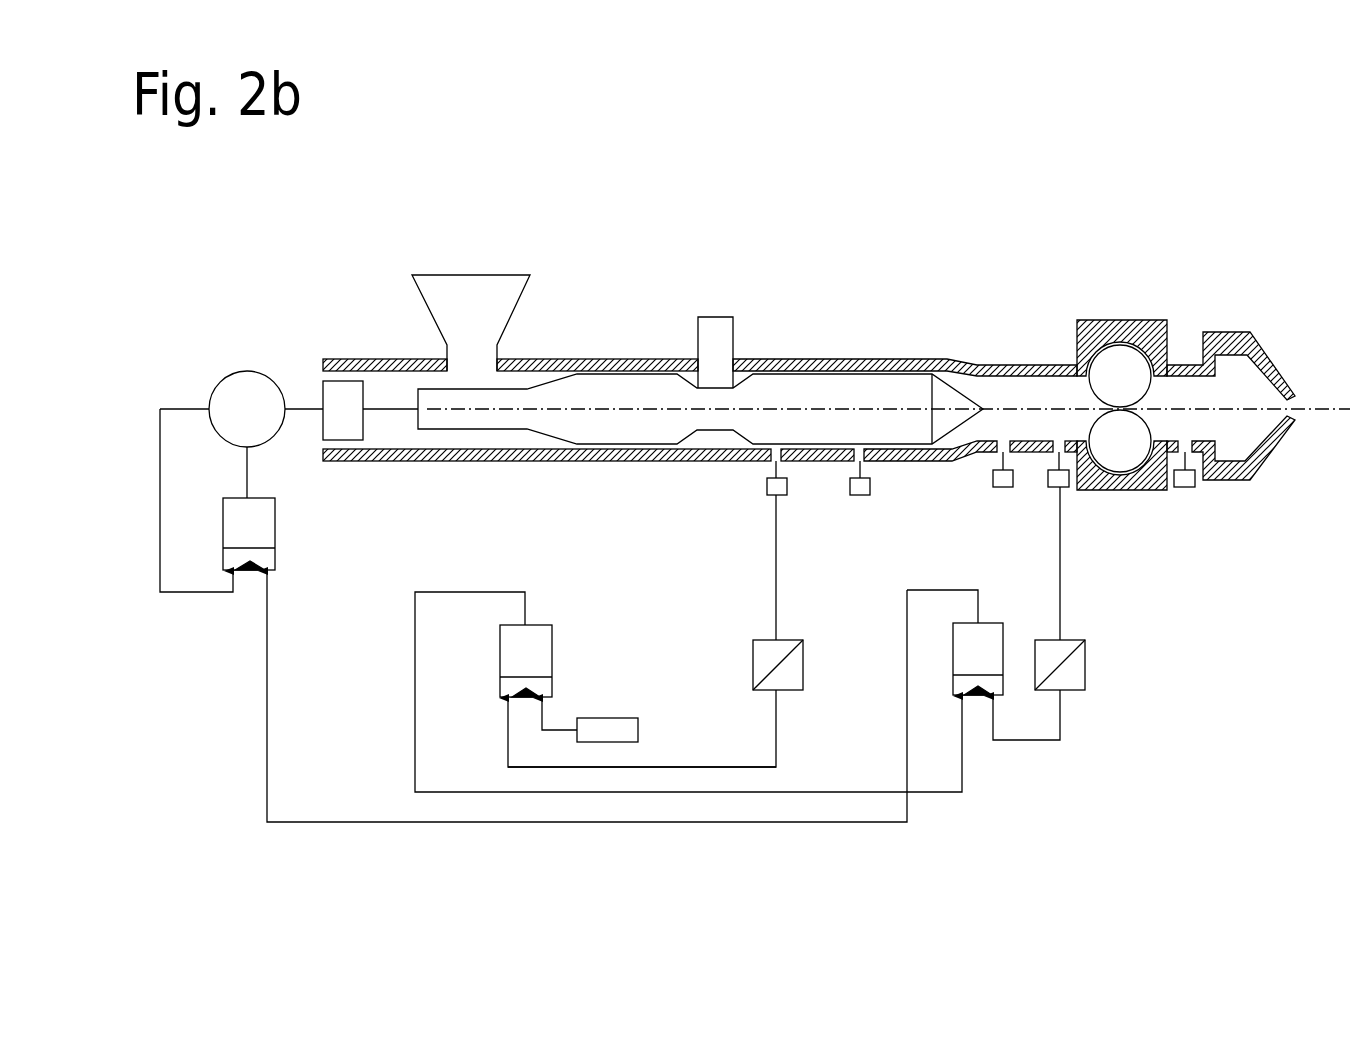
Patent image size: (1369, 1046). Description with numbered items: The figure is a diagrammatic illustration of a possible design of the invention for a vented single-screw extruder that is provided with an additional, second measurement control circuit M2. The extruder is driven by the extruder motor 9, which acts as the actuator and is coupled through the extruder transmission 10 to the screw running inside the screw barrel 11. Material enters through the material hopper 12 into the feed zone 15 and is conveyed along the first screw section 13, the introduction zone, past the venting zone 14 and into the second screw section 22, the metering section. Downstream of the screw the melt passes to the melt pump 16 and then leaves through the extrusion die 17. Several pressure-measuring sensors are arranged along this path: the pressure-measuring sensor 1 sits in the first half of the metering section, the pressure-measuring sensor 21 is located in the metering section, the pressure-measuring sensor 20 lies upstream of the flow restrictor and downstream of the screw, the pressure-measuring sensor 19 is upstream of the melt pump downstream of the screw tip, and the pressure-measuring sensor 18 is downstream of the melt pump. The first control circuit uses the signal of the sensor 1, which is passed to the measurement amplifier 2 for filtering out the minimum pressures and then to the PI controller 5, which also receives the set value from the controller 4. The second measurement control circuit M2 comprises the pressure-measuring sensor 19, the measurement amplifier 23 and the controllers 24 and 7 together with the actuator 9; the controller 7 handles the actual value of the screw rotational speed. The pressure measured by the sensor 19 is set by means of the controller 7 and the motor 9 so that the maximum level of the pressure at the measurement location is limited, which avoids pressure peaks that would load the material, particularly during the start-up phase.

The pressure-measuring sensor 1 is at (765, 490).
The measurement amplifier 2 is at (767, 688).
The controller 4 is at (610, 718).
The controller 5 is at (550, 625).
The controller 7 is at (272, 503).
The extruder motor 9 is at (222, 382).
The extruder transmission 10 is at (323, 377).
The screw barrel 11 is at (390, 358).
The material hopper 12 is at (500, 292).
The first screw section 13 is at (630, 388).
The venting zone 14 is at (713, 338).
The feed zone 15 is at (532, 440).
The melt pump 16 is at (1130, 320).
The extrusion die 17 is at (1250, 333).
The pressure-measuring sensor 18 is at (1196, 487).
The pressure-measuring sensor 19 is at (1047, 487).
The pressure-measuring sensor 20 is at (992, 487).
The pressure-measuring sensor 21 is at (850, 493).
The second screw section 22 is at (823, 370).
The measurement amplifier 23 is at (1083, 690).
The controller 24 is at (1000, 623).
The second measurement control circuit M2 is at (643, 770).